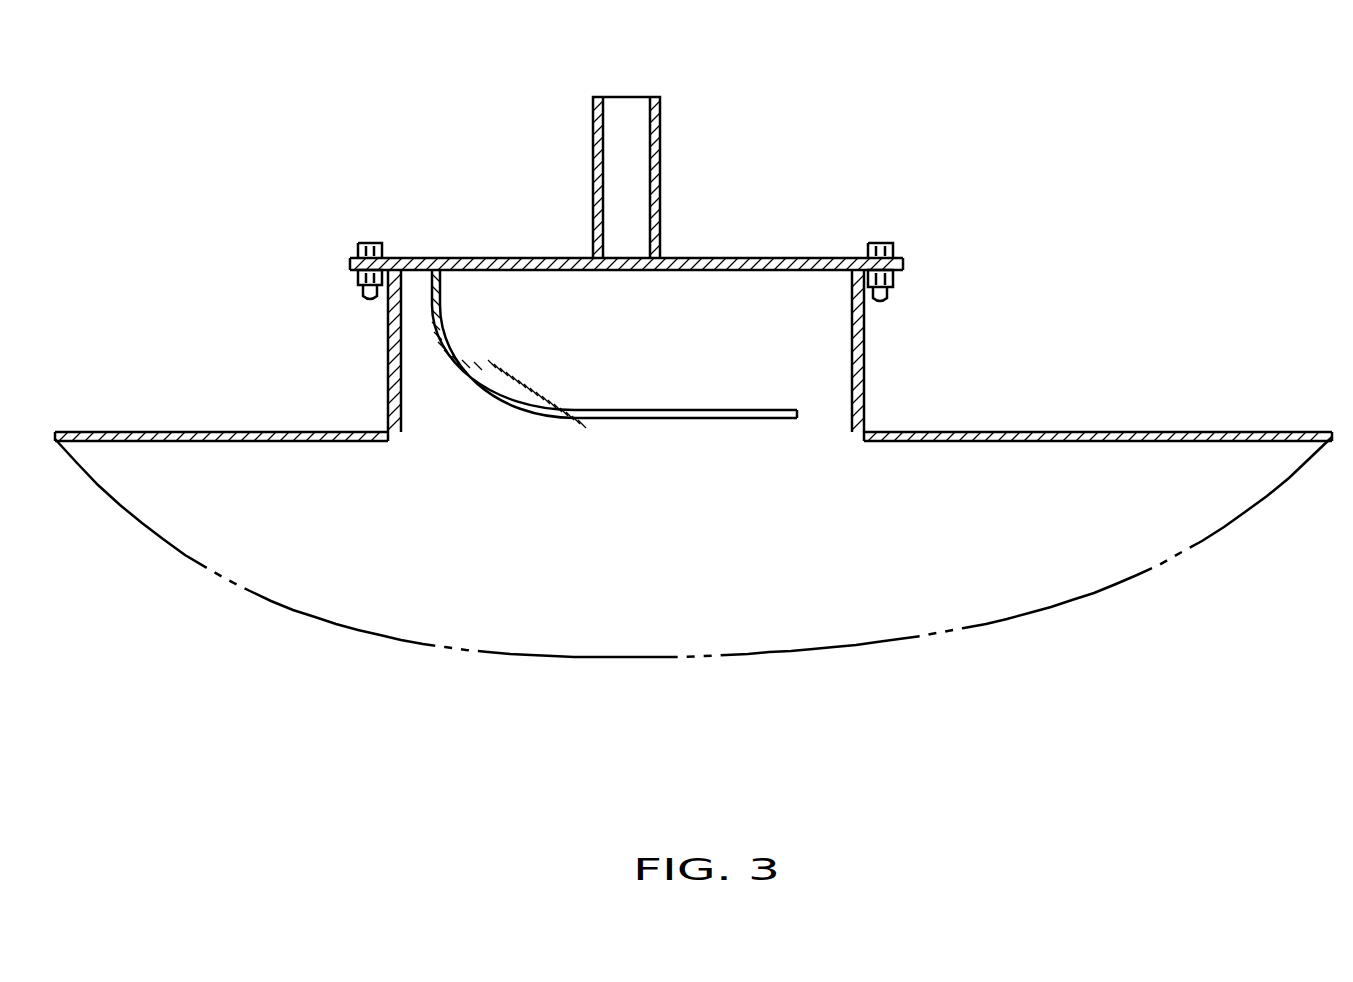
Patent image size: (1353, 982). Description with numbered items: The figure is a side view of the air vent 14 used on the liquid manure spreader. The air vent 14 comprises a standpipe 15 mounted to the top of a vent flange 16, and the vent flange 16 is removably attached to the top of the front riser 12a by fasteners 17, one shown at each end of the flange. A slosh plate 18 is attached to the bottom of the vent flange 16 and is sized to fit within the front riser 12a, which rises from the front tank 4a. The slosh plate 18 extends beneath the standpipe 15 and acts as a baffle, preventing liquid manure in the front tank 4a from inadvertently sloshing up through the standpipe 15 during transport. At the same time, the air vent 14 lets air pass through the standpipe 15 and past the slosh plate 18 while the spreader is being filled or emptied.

The air vent 14 is at (1107, 232).
The front tank 4a is at (1148, 435).
The front riser 12a is at (866, 400).
The standpipe 15 is at (660, 177).
The vent flange 16 is at (732, 258).
The fasteners 17 is at (370, 245).
The slosh plate 18 is at (637, 418).